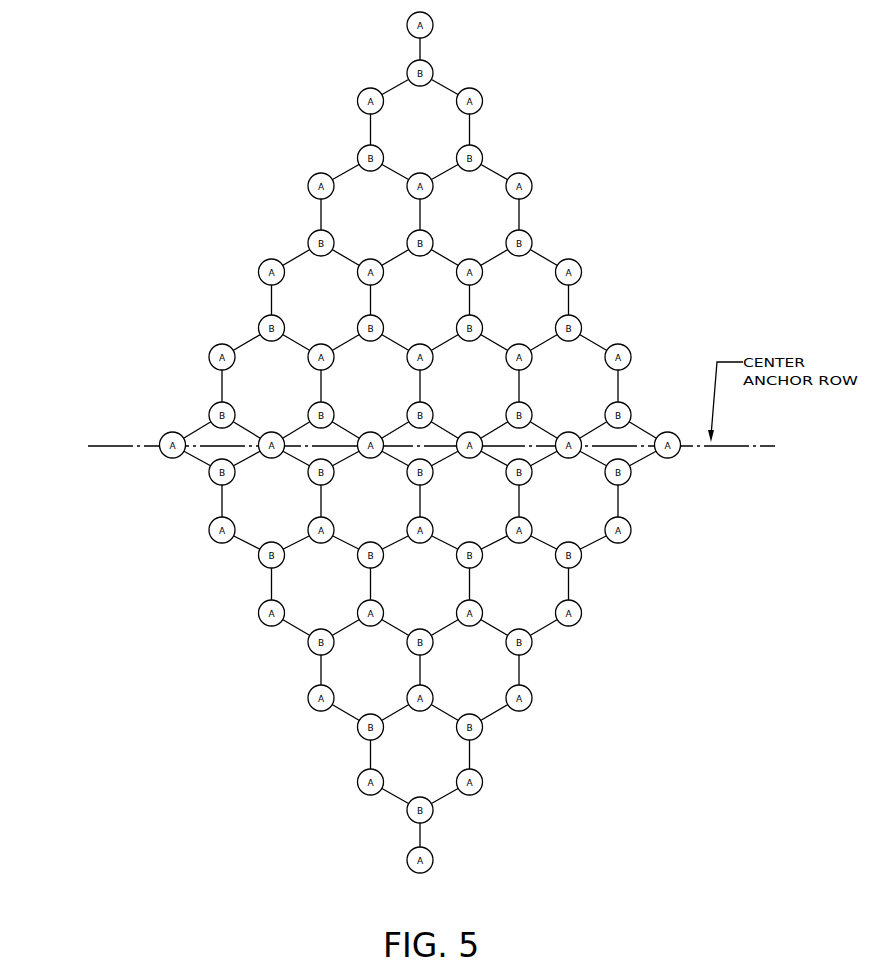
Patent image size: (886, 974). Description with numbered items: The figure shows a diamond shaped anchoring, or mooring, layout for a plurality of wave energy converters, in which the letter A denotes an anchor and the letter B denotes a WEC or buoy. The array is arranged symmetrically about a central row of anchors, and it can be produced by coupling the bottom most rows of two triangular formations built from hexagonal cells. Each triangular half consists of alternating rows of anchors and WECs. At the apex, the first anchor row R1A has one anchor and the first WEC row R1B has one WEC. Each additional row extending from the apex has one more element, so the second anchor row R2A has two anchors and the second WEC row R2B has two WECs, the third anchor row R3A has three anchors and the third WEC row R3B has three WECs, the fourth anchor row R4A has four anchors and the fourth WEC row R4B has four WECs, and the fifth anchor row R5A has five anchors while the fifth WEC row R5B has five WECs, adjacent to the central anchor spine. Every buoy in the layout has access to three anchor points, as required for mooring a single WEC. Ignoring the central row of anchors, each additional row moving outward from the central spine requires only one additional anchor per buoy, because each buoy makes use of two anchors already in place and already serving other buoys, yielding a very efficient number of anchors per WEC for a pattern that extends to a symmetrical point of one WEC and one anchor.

The first anchor row R1A is at (405, 28).
The first WEC row R1B is at (405, 75).
The second anchor row R2A is at (355, 104).
The second WEC row R2B is at (355, 162).
The third anchor row R3A is at (306, 190).
The third WEC row R3B is at (306, 247).
The fourth anchor row R4A is at (256, 273).
The fourth WEC row R4B is at (256, 332).
The fifth anchor row R5A is at (207, 360).
The fifth WEC row R5B is at (207, 418).